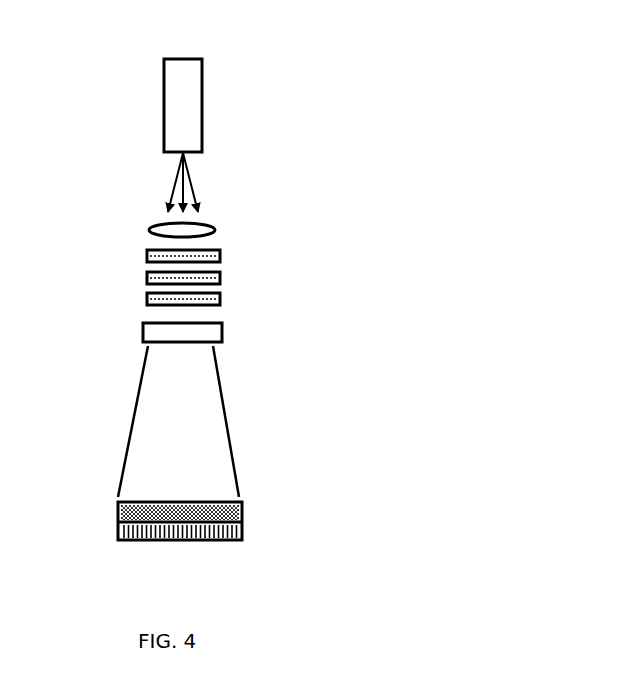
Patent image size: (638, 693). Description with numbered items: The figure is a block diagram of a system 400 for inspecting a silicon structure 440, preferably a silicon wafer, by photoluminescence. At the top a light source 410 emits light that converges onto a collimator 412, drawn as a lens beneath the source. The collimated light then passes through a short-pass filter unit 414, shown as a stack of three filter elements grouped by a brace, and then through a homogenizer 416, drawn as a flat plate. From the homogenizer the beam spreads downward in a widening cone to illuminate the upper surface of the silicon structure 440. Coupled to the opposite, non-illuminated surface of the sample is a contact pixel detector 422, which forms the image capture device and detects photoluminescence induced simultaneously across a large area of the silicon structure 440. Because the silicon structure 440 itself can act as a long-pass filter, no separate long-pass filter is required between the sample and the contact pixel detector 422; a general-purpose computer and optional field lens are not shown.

The system 400 is at (384, 232).
The light source 410 is at (203, 110).
The collimator 412 is at (215, 225).
The short-pass filter unit 414 is at (238, 247).
The homogenizer 416 is at (223, 333).
The contact pixel detector 422 is at (120, 530).
The silicon structure 440 is at (241, 513).